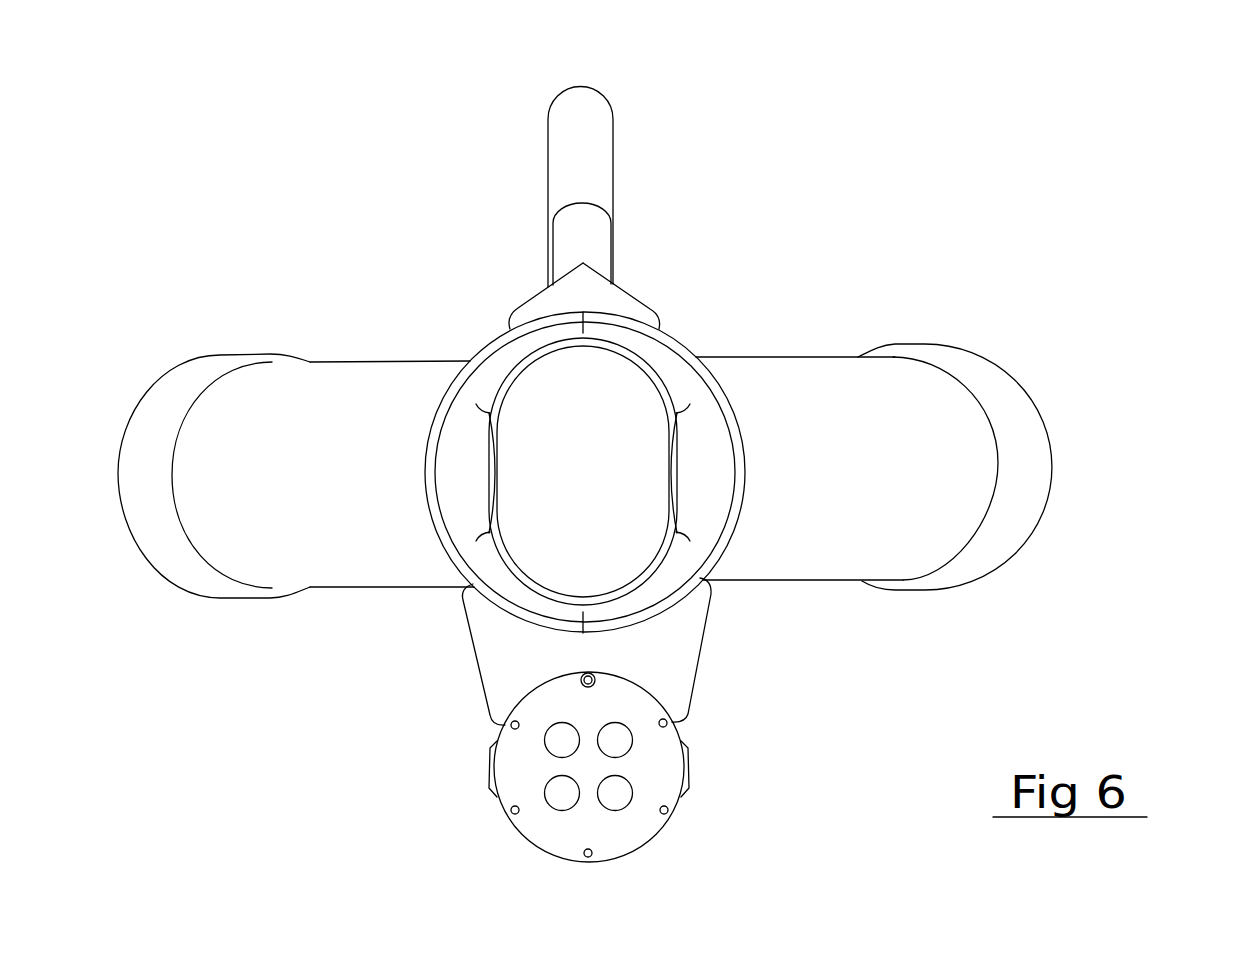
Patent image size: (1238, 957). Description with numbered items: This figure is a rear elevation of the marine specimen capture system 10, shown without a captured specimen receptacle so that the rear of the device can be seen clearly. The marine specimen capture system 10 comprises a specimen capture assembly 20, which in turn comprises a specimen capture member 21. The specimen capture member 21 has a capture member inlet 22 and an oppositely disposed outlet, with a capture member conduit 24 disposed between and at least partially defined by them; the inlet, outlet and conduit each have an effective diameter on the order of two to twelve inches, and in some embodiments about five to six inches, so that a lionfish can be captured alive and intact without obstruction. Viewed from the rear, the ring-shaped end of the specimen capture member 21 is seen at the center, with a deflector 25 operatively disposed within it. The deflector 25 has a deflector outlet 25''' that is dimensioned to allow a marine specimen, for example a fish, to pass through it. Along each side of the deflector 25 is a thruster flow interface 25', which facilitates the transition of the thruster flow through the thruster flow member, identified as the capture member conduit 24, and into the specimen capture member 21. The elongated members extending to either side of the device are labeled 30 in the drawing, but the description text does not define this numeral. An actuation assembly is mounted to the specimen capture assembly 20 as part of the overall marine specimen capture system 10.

The marine specimen capture system 10 is at (330, 138).
The specimen capture assembly 20 is at (708, 330).
The specimen capture member 21 is at (482, 346).
The capture member inlet 22 is at (465, 562).
The capture member conduit 24 is at (735, 474).
The deflector 25 is at (634, 573).
The thruster flow interface 25' is at (607, 398).
The deflector outlet 25''' is at (583, 471).
The roller arm 30 is at (1037, 363).